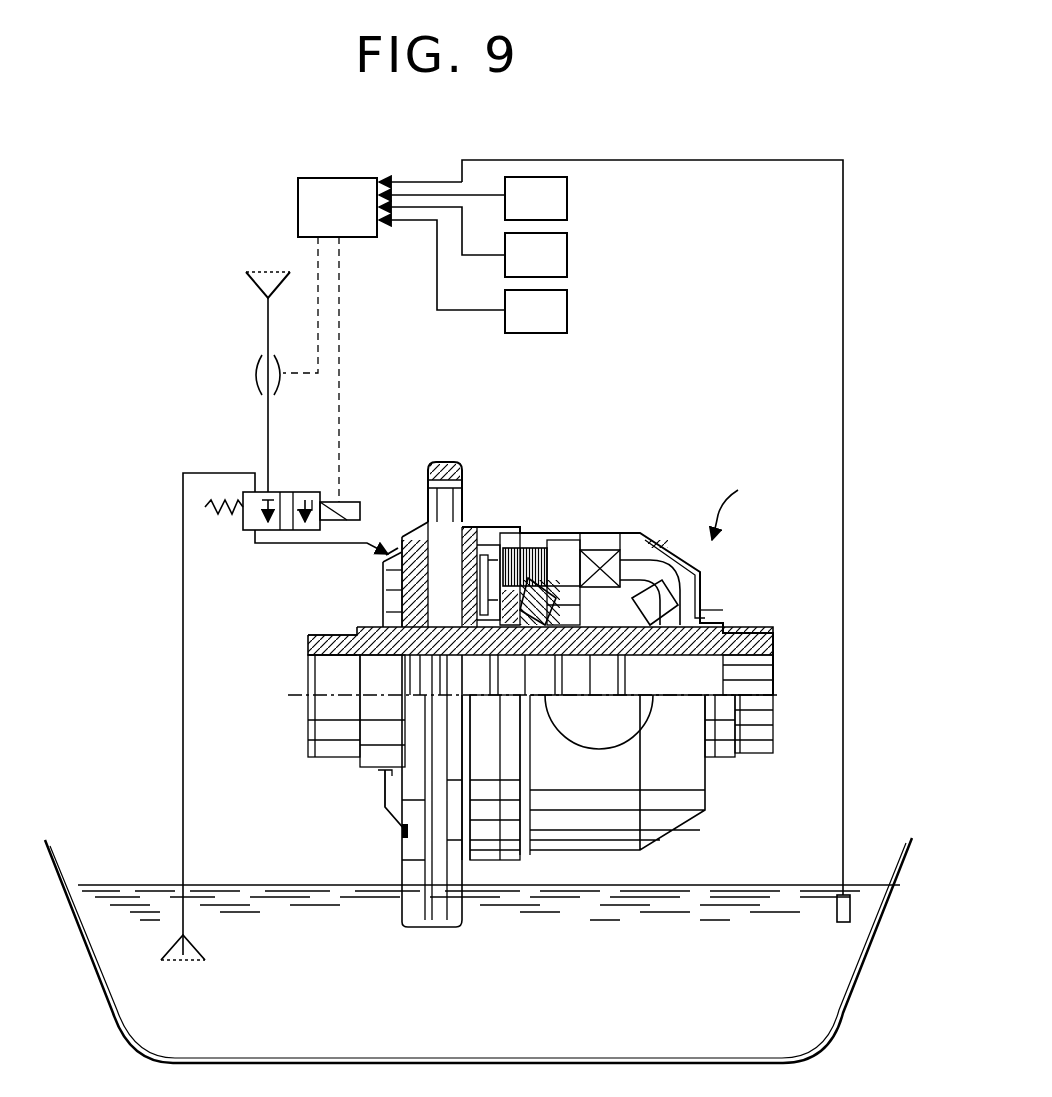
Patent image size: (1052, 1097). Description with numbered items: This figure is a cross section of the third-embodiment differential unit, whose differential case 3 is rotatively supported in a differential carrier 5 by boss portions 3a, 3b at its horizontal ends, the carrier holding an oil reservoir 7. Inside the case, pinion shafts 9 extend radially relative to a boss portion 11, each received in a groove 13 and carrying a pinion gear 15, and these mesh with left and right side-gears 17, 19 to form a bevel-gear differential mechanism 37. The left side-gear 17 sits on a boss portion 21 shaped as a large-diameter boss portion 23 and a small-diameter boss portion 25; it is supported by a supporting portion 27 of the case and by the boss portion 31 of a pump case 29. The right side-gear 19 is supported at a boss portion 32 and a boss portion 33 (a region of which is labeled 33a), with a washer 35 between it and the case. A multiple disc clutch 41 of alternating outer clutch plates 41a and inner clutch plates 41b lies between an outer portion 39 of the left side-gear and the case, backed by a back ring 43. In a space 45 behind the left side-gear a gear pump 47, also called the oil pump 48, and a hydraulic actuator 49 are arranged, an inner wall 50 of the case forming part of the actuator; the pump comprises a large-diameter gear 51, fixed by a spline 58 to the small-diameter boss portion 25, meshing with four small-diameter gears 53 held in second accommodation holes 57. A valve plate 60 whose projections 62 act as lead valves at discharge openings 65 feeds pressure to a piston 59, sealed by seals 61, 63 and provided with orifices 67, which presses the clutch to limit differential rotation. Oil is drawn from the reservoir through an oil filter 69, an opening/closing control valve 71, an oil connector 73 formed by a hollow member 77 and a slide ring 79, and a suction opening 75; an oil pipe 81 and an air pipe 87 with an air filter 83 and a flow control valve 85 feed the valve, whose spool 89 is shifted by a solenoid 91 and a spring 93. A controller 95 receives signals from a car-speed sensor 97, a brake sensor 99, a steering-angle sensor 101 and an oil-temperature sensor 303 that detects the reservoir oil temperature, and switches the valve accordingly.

The differential case 3 is at (437, 460).
The boss portion 3a is at (310, 634).
The boss portion 3b is at (760, 632).
The differential carrier 5 is at (838, 1028).
The oil reservoir 7 is at (123, 900).
The pinion shaft 9 is at (627, 532).
The boss portion 11 is at (608, 675).
The groove 13 is at (592, 533).
The pinion gear 15 is at (660, 572).
The left side-gear 17 is at (578, 675).
The right side-gear 19 is at (668, 665).
The boss portion 21 is at (450, 700).
The large-diameter boss portion 23 is at (450, 700).
The small-diameter boss portion 25 is at (448, 698).
The supporting portion 27 is at (384, 711).
The pump case 29 is at (456, 530).
The boss portion 31 is at (545, 660).
The boss portion 32 is at (776, 668).
The boss portion 33 is at (668, 705).
The recess 33a is at (600, 670).
The washer 35 is at (705, 620).
The differential mechanism 37 is at (670, 505).
The outer portion 39 is at (544, 675).
The multiple disc clutch 41 is at (590, 478).
The outer clutch plates 41a is at (548, 540).
The inner clutch plates 41b is at (545, 545).
The back ring 43 is at (592, 548).
The space 45 is at (498, 660).
The gear pump 47 is at (421, 516).
The oil pump 48 is at (400, 533).
The hydraulic actuator 49 is at (510, 513).
The inner wall 50 is at (480, 535).
The large-diameter gear 51 is at (338, 706).
The small-diameter gears 53 is at (385, 595).
The second accommodation holes 57 is at (385, 575).
The spline 58 is at (450, 675).
The piston 59 is at (512, 545).
The valve plate 60 is at (306, 652).
The seal 61 is at (488, 540).
The projections 62 is at (562, 606).
The seal 63 is at (538, 775).
The discharge openings 65 is at (401, 545).
The orifices 67 is at (510, 675).
The oil filter 69 is at (205, 945).
The opening/closing control valve 71 is at (302, 492).
The oil connector 73 is at (382, 553).
The suction opening 75 is at (385, 616).
The hollow member 77 is at (382, 790).
The slide ring 79 is at (400, 832).
The oil pipe 81 is at (183, 470).
The air filter 83 is at (262, 293).
The flow control valve 85 is at (256, 378).
The air pipe 87 is at (266, 422).
The spool 89 is at (274, 492).
The solenoid 91 is at (340, 500).
The spring 93 is at (210, 507).
The controller 95 is at (356, 223).
The car-speed sensor 97 is at (553, 213).
The brake sensor 99 is at (553, 271).
The steering-angle sensor 101 is at (558, 327).
The oil-temperature sensor 303 is at (843, 922).